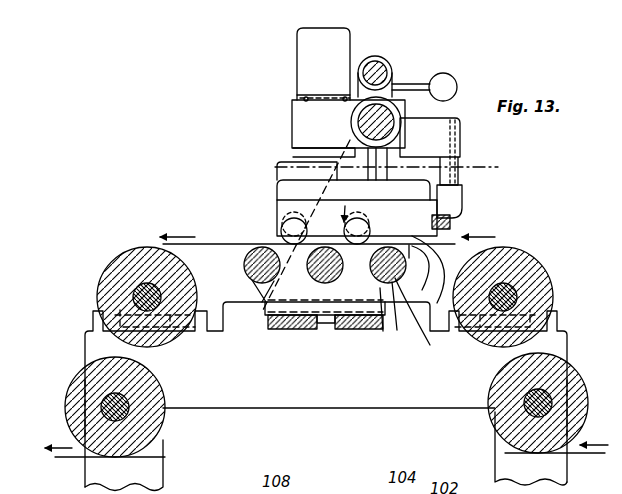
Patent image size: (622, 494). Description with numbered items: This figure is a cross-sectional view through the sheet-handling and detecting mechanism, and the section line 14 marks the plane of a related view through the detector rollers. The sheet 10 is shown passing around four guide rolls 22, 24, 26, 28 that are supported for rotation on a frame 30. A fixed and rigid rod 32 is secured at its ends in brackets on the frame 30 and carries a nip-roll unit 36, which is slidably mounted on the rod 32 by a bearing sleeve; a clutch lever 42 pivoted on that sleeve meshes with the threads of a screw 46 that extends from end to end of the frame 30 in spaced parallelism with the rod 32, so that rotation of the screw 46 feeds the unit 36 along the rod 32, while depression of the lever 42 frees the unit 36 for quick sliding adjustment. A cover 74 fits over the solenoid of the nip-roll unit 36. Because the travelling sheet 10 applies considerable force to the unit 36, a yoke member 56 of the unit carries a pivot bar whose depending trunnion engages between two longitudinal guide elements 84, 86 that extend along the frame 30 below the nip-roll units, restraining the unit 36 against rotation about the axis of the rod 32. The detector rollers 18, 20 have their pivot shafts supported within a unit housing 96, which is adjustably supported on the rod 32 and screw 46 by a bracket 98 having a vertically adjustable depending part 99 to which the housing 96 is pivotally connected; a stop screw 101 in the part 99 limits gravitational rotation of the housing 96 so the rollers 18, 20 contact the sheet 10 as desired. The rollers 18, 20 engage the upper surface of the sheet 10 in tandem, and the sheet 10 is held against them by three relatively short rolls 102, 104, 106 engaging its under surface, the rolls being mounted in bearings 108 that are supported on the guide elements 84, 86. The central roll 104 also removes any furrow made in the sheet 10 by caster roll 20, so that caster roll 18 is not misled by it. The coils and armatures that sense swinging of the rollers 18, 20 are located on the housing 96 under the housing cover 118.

The sheet 10 is at (468, 241).
The section line 14 is at (232, 165).
The detector roller 18 is at (281, 243).
The detector roller 20 is at (334, 210).
The guide roll 22 is at (578, 385).
The guide roll 24 is at (520, 273).
The guide roll 26 is at (127, 262).
The guide roll 28 is at (78, 384).
The frame 30 is at (280, 410).
The supporting rod 32 is at (385, 122).
The nip-roll unit 36 is at (290, 124).
The clutch lever 42 is at (416, 84).
The screw 46 is at (386, 60).
The yoke member 56 is at (422, 272).
The cover 74 is at (308, 53).
The longitudinal guide element 84 is at (293, 329).
The longitudinal guide element 86 is at (360, 329).
The unit housing 96 is at (273, 210).
The bracket 98 is at (440, 137).
The depending bracket part 99 is at (460, 176).
The stop screw 101 is at (452, 224).
The short roll 102 is at (418, 321).
The short roll 104 is at (330, 280).
The short roll 106 is at (276, 276).
The bearing 108 is at (398, 331).
The housing cover 118 is at (290, 191).